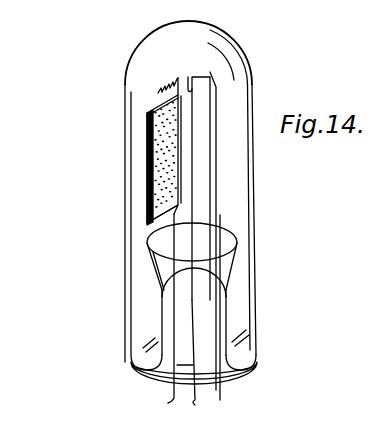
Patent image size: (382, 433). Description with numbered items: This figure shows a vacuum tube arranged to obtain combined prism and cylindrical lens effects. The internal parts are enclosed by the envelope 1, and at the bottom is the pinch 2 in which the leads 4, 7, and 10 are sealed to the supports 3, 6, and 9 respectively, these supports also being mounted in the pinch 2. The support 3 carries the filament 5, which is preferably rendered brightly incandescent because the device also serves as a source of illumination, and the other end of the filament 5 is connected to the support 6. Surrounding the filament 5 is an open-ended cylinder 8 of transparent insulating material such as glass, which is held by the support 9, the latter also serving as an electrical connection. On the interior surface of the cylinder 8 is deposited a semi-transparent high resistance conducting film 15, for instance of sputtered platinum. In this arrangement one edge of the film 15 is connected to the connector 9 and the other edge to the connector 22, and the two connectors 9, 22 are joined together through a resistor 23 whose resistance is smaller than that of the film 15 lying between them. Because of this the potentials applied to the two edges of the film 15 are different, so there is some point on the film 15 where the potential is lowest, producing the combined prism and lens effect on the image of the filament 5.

The envelope 1 is at (128, 188).
The pinch 2 is at (153, 255).
The support 3 is at (213, 133).
The lead 4 is at (220, 398).
The filament 5 is at (197, 178).
The support 6 is at (237, 233).
The lead 7 is at (197, 362).
The open-ended cylinder 8 is at (150, 128).
The support 9 is at (162, 280).
The lead 10 is at (168, 318).
The high resistance conducting film 15 is at (156, 143).
The connector 22 is at (152, 222).
The resistor 23 is at (158, 92).